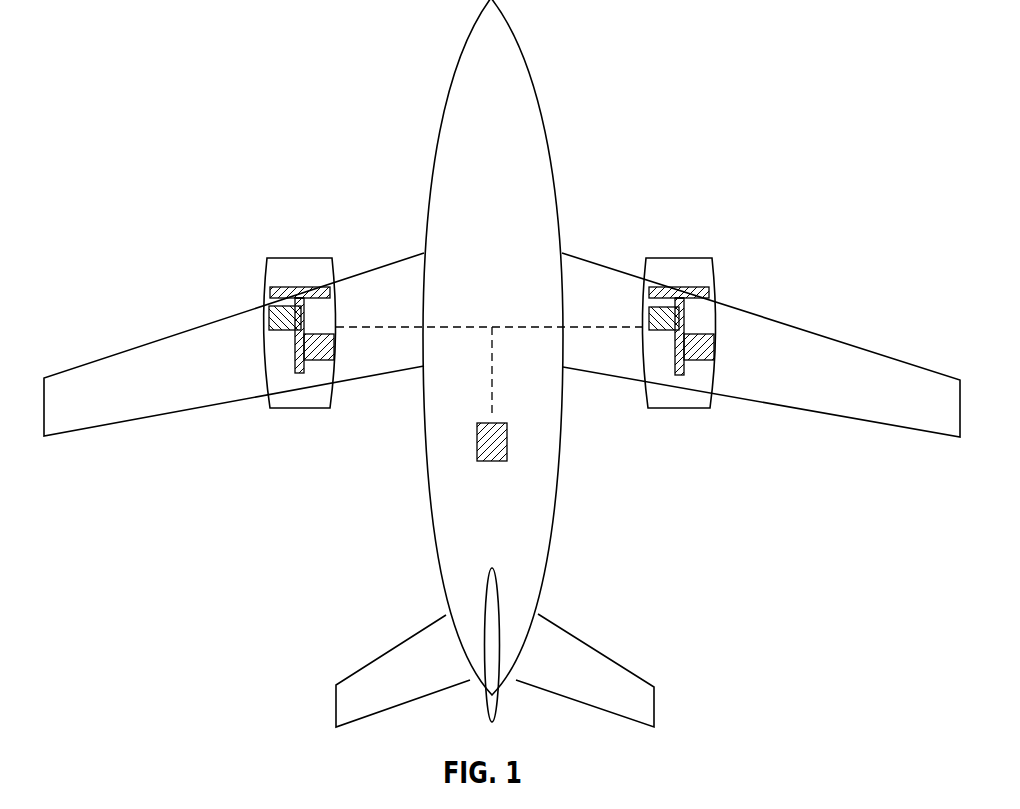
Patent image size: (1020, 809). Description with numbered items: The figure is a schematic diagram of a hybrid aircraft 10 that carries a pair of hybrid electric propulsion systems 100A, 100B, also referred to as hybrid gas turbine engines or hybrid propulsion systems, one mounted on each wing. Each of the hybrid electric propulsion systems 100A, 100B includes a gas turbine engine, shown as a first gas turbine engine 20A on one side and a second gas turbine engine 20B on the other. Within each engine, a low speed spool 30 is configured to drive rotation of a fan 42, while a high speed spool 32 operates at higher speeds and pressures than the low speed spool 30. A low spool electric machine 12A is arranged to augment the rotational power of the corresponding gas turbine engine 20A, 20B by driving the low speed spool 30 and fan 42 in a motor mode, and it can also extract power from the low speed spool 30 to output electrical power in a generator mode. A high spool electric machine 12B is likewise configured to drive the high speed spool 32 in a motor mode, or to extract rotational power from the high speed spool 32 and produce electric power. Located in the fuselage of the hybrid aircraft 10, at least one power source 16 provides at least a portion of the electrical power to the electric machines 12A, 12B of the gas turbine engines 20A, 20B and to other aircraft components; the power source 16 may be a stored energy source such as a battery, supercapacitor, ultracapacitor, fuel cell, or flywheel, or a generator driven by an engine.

The hybrid aircraft 10 is at (388, 102).
The hybrid electric propulsion system 100A is at (244, 351).
The hybrid electric propulsion system 100B is at (737, 352).
The first gas turbine engine 20A is at (310, 400).
The second gas turbine engine 20B is at (675, 400).
The fan 42 is at (300, 287).
The low spool electric machine 12A is at (270, 316).
The high spool electric machine 12B is at (335, 350).
The low speed spool 30 is at (305, 323).
The high speed spool 32 is at (295, 350).
The power source 16 is at (490, 462).